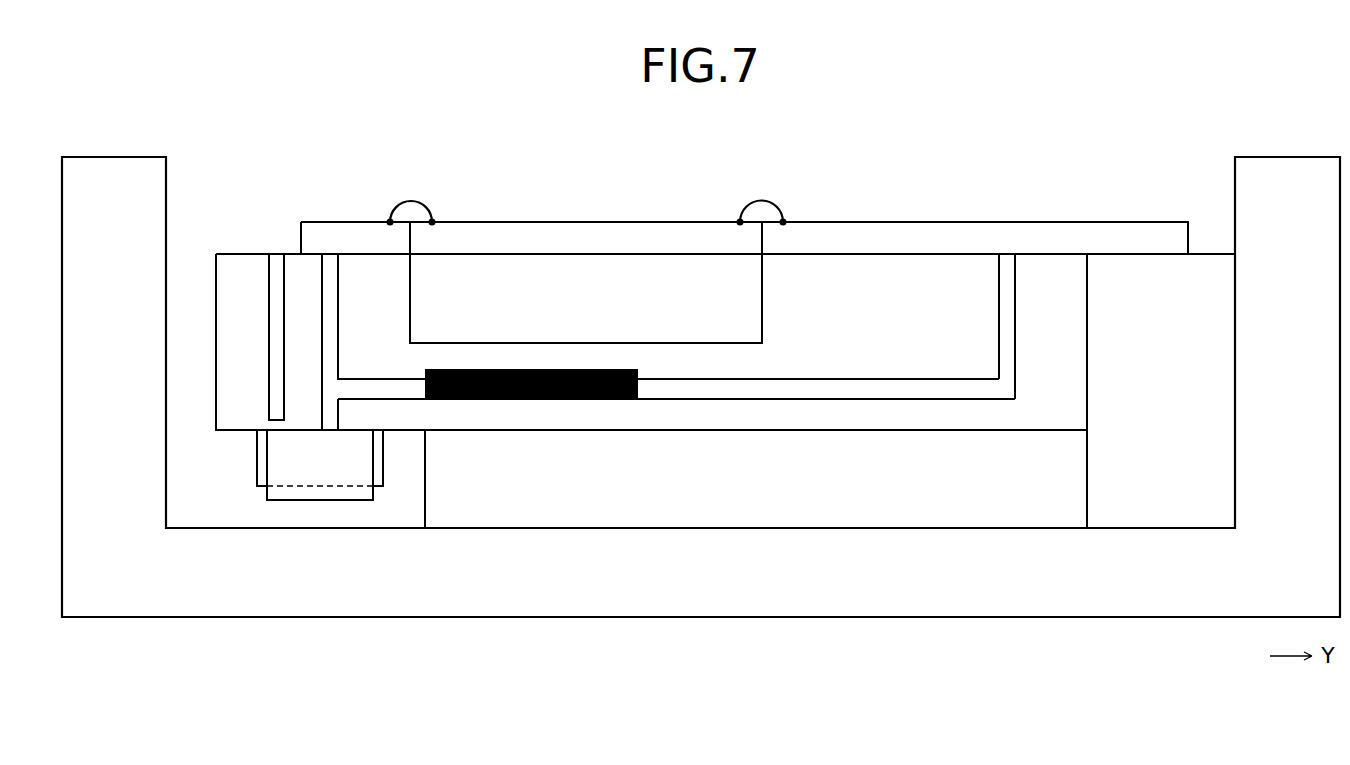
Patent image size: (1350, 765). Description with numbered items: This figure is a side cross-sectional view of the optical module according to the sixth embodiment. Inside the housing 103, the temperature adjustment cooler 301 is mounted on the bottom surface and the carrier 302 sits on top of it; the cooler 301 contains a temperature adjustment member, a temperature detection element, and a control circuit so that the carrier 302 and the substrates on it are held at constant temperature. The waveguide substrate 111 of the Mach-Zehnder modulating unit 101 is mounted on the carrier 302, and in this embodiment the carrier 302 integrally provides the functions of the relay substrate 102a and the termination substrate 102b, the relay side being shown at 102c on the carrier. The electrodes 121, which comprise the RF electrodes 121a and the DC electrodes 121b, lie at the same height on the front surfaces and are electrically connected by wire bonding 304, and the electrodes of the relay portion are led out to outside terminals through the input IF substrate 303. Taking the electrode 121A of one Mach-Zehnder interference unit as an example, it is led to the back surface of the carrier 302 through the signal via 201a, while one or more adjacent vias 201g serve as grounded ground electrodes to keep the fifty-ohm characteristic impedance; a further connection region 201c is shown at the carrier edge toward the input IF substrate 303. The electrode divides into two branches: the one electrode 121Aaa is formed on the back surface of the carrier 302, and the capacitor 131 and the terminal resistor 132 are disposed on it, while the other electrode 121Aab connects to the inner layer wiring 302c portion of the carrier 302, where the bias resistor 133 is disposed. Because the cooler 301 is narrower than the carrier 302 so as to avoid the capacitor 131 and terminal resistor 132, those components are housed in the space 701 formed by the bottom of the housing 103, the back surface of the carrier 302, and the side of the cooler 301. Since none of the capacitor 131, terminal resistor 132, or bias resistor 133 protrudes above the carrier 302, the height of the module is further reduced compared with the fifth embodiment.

The Mach-Zehnder modulating unit 101 is at (586, 240).
The waveguide substrate 111 is at (558, 266).
The relay substrate 102a is at (800, 283).
The termination substrate 102b is at (371, 278).
The carrier bottom portion 102c is at (667, 343).
The housing 103 is at (1024, 612).
The electrodes 121 is at (952, 187).
The carrier end portion 121A is at (353, 235).
The one electrode 121Aaa is at (330, 373).
The other electrode 121Aab is at (397, 390).
The RF electrodes 121a is at (1028, 237).
The DC electrodes 121b is at (929, 390).
The capacitor 131 is at (321, 500).
The terminal resistor 132 is at (257, 460).
The bias resistor 133 is at (502, 399).
The via 201a is at (329, 392).
The electrical connection gap 201c is at (1008, 323).
The vias 201g is at (277, 315).
The temperature adjustment cooler 301 is at (875, 510).
The carrier 302 is at (823, 347).
The inner layer wiring 302c is at (888, 390).
The input IF substrate 303 is at (1173, 508).
The wire bonding 304 is at (412, 199).
The space 701 is at (270, 512).